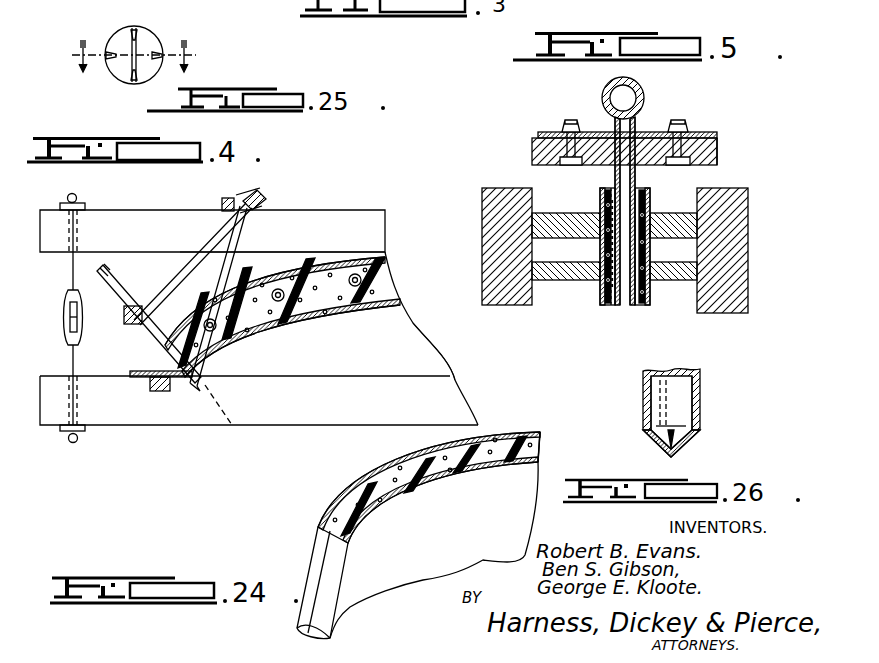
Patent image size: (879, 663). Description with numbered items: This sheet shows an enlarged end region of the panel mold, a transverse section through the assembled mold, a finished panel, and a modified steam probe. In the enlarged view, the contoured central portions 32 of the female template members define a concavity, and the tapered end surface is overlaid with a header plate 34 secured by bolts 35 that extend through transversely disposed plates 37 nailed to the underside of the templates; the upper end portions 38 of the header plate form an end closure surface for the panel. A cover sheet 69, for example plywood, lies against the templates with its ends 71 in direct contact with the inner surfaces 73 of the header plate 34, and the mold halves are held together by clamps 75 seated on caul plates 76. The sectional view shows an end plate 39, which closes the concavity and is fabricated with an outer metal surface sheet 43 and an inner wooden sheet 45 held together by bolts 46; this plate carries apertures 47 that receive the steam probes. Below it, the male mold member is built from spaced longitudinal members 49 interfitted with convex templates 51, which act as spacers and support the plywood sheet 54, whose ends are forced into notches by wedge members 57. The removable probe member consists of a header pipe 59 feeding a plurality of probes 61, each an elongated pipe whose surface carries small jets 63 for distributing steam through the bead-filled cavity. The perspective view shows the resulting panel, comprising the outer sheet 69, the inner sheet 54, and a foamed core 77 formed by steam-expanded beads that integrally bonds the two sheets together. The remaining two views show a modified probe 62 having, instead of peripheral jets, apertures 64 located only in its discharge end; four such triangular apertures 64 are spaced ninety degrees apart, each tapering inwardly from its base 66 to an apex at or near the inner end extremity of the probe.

In FIG. 5, the central portions 32 is at (748, 231).
In FIG. 4, the header plate 34 is at (150, 298).
In FIG. 4, the bolts 35 is at (216, 233).
In FIG. 4, the transversely disposed plates 37 is at (240, 198).
In FIG. 4, the upper end portions 38 is at (213, 352).
In FIG. 5, the end plates 39 is at (653, 134).
In FIG. 5, the outer metal surface sheet 43 is at (692, 130).
In FIG. 5, the inner wooden sheet 45 is at (718, 156).
In FIG. 5, the bolts 46 is at (532, 150).
In FIG. 5, the apertures 47 is at (613, 130).
In FIG. 4, the longitudinal members 49 is at (468, 402).
In FIG. 5, the longitudinal members 49 is at (482, 204).
In FIG. 4, the convex templates 51 is at (428, 356).
In FIG. 5, the convex templates 51 is at (482, 226).
In FIG. 4, the plywood sheet 54 is at (283, 322).
In FIG. 24, the plywood sheet 54 is at (393, 500).
In FIG. 5, the plywood sheet 54 is at (602, 298).
In FIG. 4, the wedge members 57 is at (140, 372).
In FIG. 5, the header pipe 59 is at (645, 88).
In FIG. 4, the probes 61 is at (367, 258).
In FIG. 5, the probes 61 is at (630, 308).
In FIG. 25, the probe 62 is at (108, 55).
In FIG. 26, the probe 62 is at (701, 392).
In FIG. 5, the jets 63 is at (608, 308).
In FIG. 25, the apertures 64 is at (140, 55).
In FIG. 26, the apertures 64 is at (672, 456).
In FIG. 25, the base 66 is at (131, 70).
In FIG. 26, the base 66 is at (658, 434).
In FIG. 4, the cover sheet 69 is at (233, 263).
In FIG. 24, the cover sheet 69 is at (400, 462).
In FIG. 5, the cover sheet 69 is at (650, 305).
In FIG. 4, the ends 71 is at (146, 328).
In FIG. 4, the inner surfaces 73 is at (224, 278).
In FIG. 4, the clamps 75 is at (64, 316).
In FIG. 4, the caul plates 76 is at (84, 206).
In FIG. 24, the foam core 77 is at (541, 433).